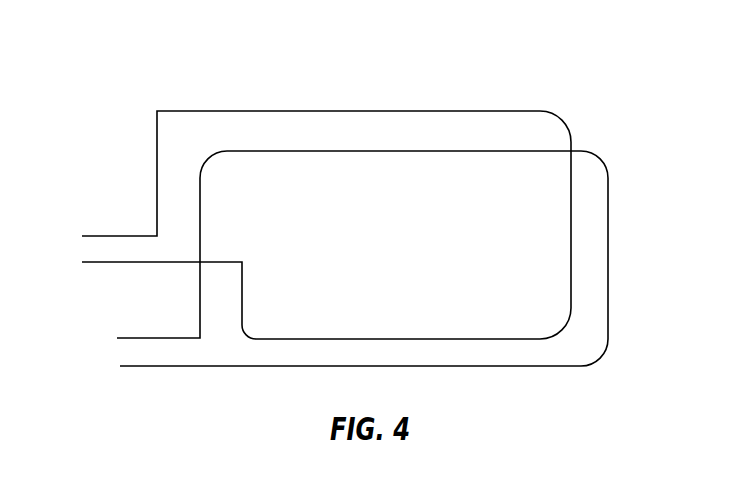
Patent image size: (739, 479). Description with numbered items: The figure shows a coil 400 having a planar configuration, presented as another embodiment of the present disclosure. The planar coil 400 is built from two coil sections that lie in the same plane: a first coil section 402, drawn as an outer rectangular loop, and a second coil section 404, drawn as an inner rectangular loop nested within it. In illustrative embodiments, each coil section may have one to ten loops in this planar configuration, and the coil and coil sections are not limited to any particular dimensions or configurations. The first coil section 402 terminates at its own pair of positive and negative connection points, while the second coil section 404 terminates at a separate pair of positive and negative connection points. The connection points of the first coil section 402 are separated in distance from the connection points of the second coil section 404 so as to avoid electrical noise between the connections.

The coil 400 is at (506, 64).
The first coil section 402 is at (398, 110).
The second coil section 404 is at (611, 207).